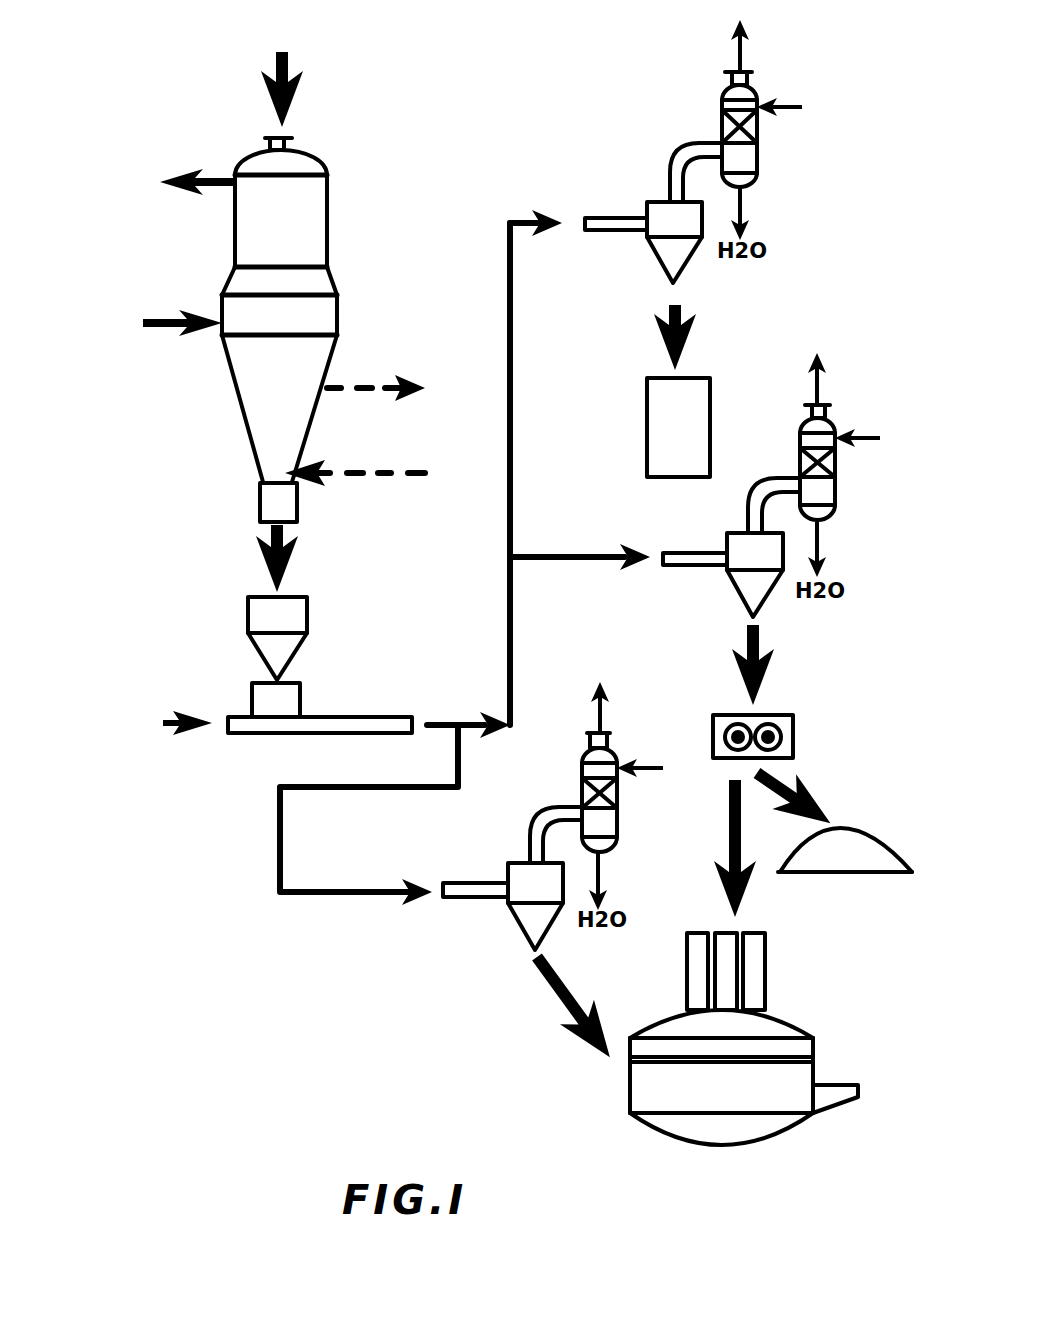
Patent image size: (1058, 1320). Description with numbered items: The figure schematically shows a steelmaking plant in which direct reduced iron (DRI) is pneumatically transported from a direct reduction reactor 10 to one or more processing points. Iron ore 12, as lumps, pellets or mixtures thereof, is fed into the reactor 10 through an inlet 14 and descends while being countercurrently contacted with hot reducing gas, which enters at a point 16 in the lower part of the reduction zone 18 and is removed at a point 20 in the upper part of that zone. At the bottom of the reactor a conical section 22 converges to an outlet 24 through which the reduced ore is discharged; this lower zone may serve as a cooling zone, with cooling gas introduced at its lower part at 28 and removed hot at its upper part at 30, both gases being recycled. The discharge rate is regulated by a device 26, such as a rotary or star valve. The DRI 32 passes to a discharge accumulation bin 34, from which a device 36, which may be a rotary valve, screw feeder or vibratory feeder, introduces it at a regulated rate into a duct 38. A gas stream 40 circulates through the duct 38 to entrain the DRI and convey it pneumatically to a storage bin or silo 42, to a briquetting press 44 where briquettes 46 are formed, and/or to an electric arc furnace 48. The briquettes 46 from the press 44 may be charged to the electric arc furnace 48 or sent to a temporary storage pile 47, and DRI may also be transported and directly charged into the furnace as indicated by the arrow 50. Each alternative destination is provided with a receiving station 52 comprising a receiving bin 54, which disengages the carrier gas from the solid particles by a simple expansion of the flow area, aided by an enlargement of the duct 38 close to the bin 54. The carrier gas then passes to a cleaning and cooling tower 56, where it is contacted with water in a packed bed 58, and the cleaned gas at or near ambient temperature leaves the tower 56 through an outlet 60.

The direct reduction reactor 10 is at (330, 235).
The iron ore 12 is at (293, 73).
The inlet 14 is at (292, 140).
The reducing gas introduction point 16 is at (163, 318).
The reduction zone 18 is at (257, 238).
The reducing gas removal point 20 is at (203, 168).
The conical section 22 is at (255, 383).
The outlet 24 is at (262, 486).
The discharge rate regulating device 26 is at (258, 508).
The cooling gas inlet 28 is at (360, 468).
The cooling gas outlet 30 is at (365, 382).
The DRI 32 is at (262, 560).
The discharge accumulation bin 34 is at (248, 622).
The feeding device 36 is at (248, 698).
The duct 38 is at (333, 712).
The gas stream 40 is at (175, 725).
The storage bin or silo 42 is at (647, 405).
The briquetting press 44 is at (793, 728).
The briquettes 46 is at (727, 837).
The temporary storage pile 47 is at (857, 830).
The electric arc furnace 48 is at (797, 1015).
The direct charging arrow 50 is at (553, 1000).
The receiving station 52 is at (589, 524).
The receiving bin 54 is at (657, 207).
The cleaning and cooling tower 56 is at (739, 456).
The packed bed 58 is at (776, 128).
The outlet 60 is at (769, 72).